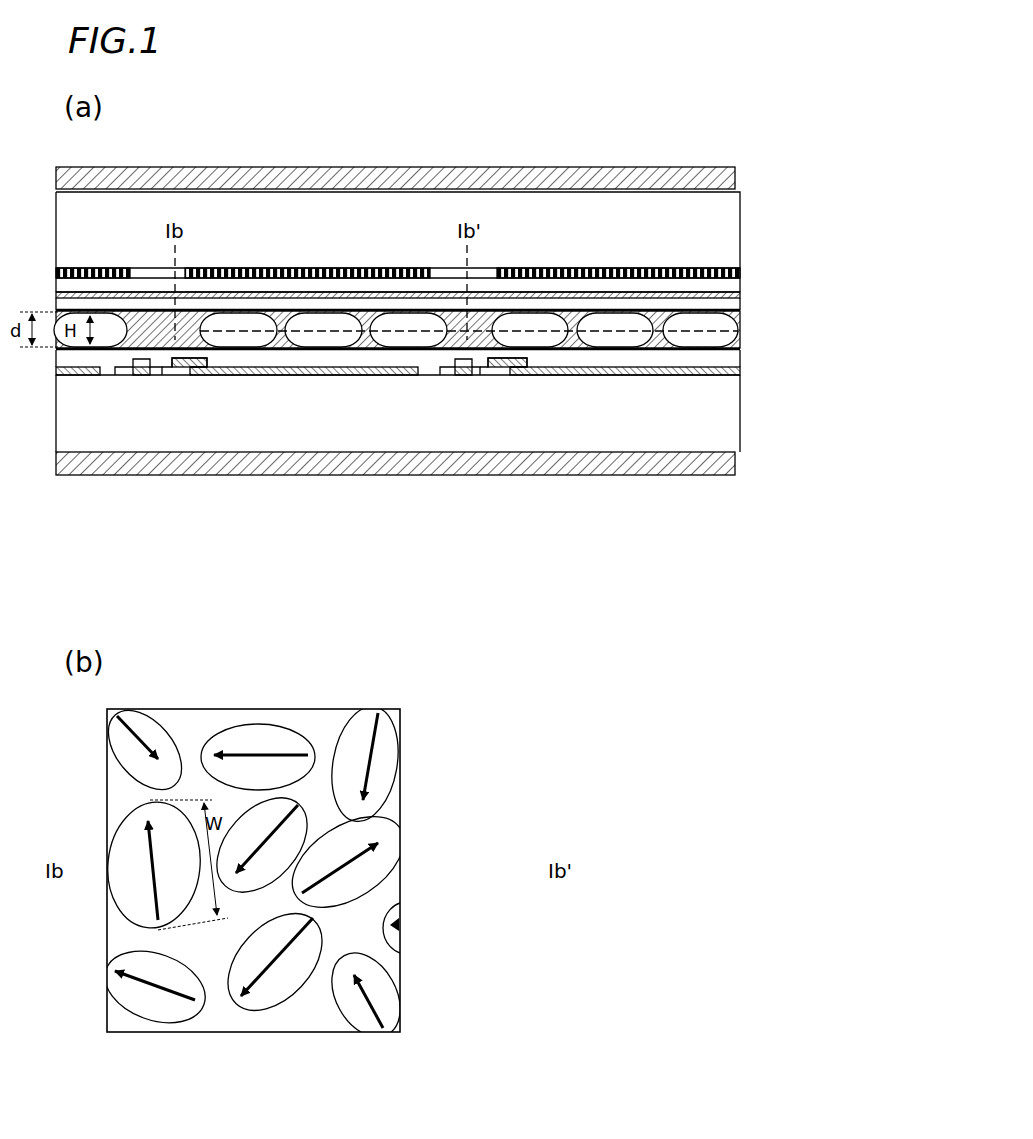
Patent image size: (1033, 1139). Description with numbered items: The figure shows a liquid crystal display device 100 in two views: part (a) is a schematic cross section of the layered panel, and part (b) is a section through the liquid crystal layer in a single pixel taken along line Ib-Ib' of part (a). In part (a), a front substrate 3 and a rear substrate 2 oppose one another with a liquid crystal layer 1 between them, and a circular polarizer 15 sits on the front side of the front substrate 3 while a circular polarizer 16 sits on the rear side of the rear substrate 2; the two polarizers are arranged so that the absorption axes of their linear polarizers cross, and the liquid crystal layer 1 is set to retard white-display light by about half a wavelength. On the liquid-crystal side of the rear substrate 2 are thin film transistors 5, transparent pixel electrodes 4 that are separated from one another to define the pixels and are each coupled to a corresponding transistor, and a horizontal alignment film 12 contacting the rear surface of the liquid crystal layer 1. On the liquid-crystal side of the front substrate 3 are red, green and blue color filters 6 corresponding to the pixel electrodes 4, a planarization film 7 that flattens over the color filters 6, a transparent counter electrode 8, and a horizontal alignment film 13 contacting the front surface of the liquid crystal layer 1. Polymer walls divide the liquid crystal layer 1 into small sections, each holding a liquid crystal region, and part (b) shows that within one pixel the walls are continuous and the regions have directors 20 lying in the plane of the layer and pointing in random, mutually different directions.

The liquid crystal display device 100 is at (716, 144).
The circular polarizer 15 is at (735, 178).
The front substrate 3 is at (725, 230).
The color filters 6 is at (535, 265).
The planarization film 7 is at (617, 288).
The counter electrode 8 is at (738, 300).
The alignment film 13 is at (742, 311).
The liquid crystal layer 1 is at (417, 427).
The alignment film 12 is at (733, 360).
The thin film transistors 5 is at (478, 375).
The pixel electrodes 4 is at (623, 375).
The rear substrate 2 is at (718, 412).
The circular polarizer 16 is at (737, 465).
The directors 20 is at (266, 752).